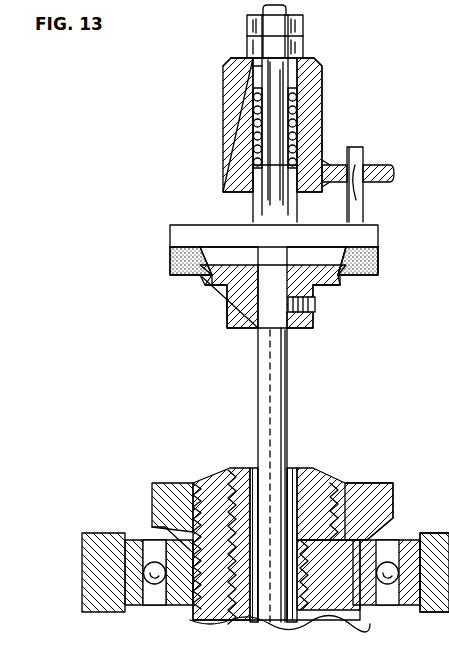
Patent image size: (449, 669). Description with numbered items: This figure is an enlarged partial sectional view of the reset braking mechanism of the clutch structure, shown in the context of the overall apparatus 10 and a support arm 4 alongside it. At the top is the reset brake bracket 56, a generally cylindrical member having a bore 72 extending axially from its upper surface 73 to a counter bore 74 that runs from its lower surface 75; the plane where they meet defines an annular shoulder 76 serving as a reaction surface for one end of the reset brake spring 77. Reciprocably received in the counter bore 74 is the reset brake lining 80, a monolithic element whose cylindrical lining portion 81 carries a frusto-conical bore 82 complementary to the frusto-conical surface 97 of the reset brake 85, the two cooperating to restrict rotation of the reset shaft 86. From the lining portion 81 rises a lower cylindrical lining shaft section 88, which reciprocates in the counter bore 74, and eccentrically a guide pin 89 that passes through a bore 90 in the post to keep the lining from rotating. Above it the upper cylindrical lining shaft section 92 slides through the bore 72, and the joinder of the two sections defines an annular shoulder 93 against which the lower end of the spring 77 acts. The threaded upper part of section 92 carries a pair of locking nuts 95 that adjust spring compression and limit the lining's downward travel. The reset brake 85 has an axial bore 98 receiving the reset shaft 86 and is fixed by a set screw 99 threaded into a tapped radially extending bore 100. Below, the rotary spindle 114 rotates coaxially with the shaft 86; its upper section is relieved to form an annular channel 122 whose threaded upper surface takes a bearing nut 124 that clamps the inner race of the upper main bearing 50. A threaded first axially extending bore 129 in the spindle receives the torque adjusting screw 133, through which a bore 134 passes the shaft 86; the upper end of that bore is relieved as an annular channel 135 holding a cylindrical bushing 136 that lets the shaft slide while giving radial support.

The arm 4 is at (394, 173).
The apparatus 10 is at (448, 118).
The upper main bearing 50 is at (130, 545).
The reset brake bracket 56 is at (223, 100).
The bore 72 is at (287, 75).
The upper surface 73 is at (238, 58).
The counter bore 74 is at (253, 128).
The lower surface 75 is at (308, 192).
The annular shoulder 76 is at (296, 95).
The reset brake spring 77 is at (300, 130).
The reset brake lining 80 is at (170, 236).
The cylindrical lining portion 81 is at (380, 252).
The frusto-conical bore 82 is at (205, 275).
The reset brake 85 is at (227, 300).
The reset shaft 86 is at (268, 372).
The lower cylindrical lining shaft section 88 is at (262, 200).
The guide pin 89 is at (360, 160).
The bore 90 is at (365, 200).
The upper cylindrical lining shaft section 92 is at (270, 68).
The annular shoulder 93 is at (250, 162).
The locking nuts 95 is at (305, 34).
The frusto-conical surface 97 is at (340, 282).
The bore 98 is at (268, 318).
The set screw 99 is at (315, 305).
The tapped radially extending bore 100 is at (298, 326).
The rotary spindle 114 is at (212, 450).
The annular channel 122 is at (165, 520).
The bearing nut 124 is at (200, 492).
The first axially extending bore 129 is at (340, 476).
The torque adjusting screw 133 is at (238, 490).
The bore 134 is at (266, 622).
The annular channel 135 is at (290, 475).
The cylindrical bushing 136 is at (350, 490).